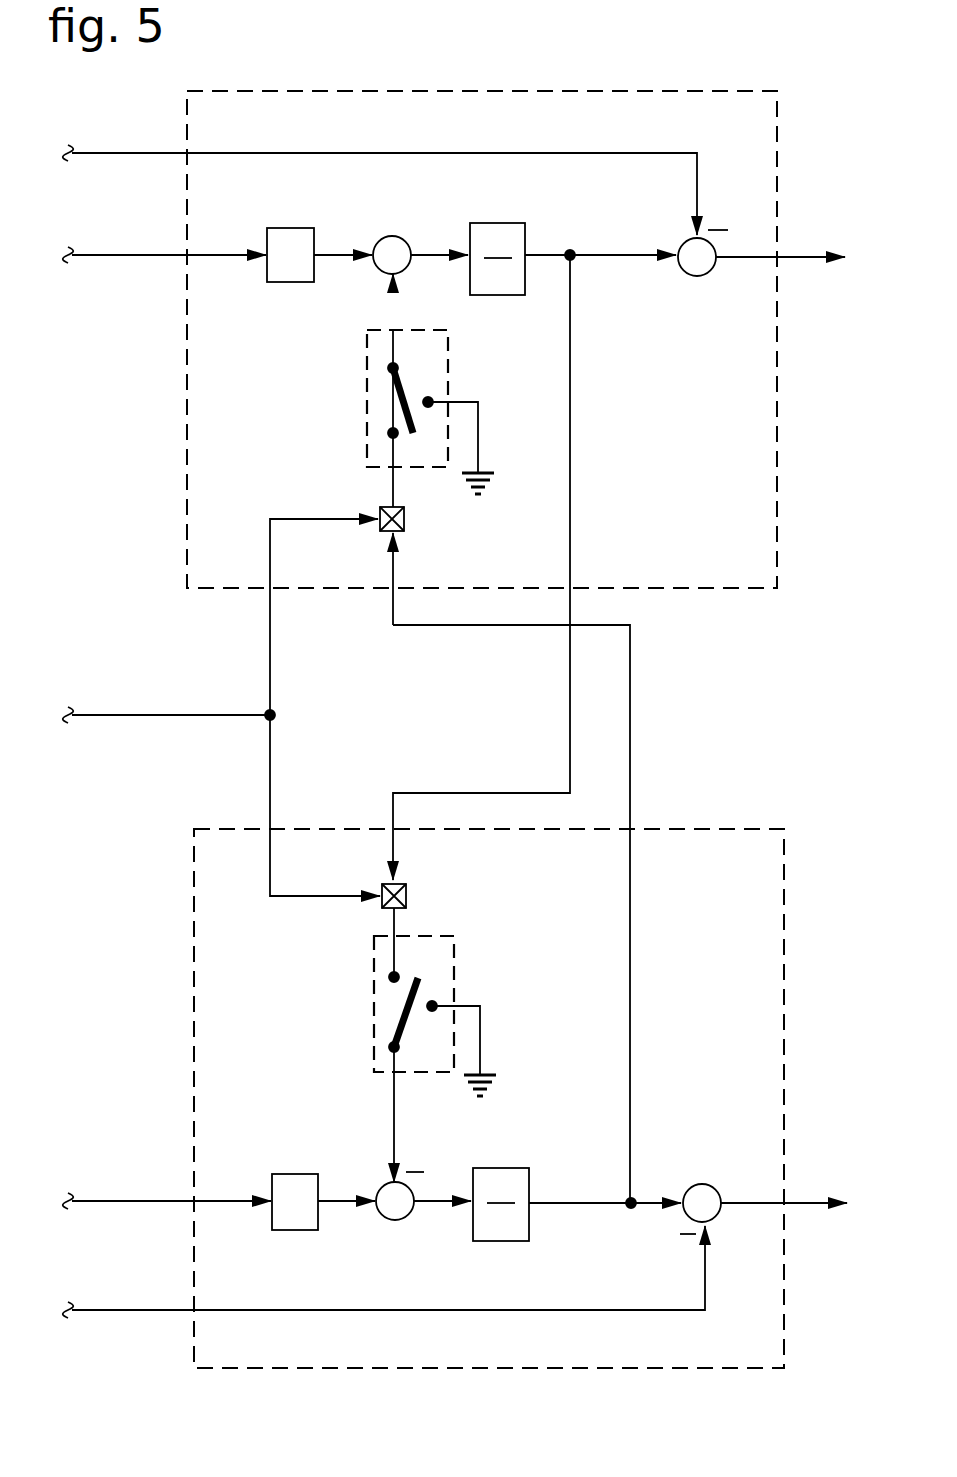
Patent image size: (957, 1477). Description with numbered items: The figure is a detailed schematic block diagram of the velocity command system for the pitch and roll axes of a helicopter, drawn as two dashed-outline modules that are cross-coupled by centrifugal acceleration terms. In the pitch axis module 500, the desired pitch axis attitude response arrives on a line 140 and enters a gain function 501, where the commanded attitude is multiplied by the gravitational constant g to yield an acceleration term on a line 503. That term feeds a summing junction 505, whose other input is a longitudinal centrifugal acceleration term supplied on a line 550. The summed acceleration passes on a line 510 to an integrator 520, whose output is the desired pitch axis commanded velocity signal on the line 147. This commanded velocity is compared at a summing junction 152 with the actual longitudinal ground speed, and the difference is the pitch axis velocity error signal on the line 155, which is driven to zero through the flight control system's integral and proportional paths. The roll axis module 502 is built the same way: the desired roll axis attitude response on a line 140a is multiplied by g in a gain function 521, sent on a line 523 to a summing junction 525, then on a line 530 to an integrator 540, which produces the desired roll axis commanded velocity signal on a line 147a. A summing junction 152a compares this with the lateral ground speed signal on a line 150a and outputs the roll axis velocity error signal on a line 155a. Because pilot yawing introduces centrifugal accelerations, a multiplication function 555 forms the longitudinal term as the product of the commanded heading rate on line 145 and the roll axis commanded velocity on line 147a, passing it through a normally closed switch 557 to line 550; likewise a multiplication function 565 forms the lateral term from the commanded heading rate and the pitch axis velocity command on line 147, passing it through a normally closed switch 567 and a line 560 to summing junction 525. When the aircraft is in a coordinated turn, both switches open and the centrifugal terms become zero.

The pitch axis module 500 is at (725, 92).
The lateral ground speed signal line 150a is at (550, 153).
The desired pitch axis attitude response line 140 is at (160, 254).
The gain function 501 is at (268, 230).
The acceleration term line 503 is at (336, 252).
The summing junction 505 is at (398, 236).
The acceleration term line 510 is at (423, 262).
The integrator 520 is at (482, 222).
The desired pitch axis commanded velocity signal line 147 is at (580, 255).
The summing junction 152 is at (700, 277).
The pitch axis velocity error signal line 155 is at (800, 260).
The longitudinal centrifugal acceleration term line 550 is at (388, 314).
The normally closed switch 557 is at (450, 352).
The multiplication function 555 is at (405, 519).
The desired roll axis commanded velocity signal line 147a is at (436, 627).
The commanded heading rate line 145 is at (100, 714).
The roll axis module 502 is at (705, 829).
The multiplication function 565 is at (408, 900).
The normally closed switch 567 is at (455, 946).
The lateral centrifugal acceleration term line 560 is at (393, 1132).
The desired roll axis attitude response line 140a is at (162, 1198).
The gain function 521 is at (276, 1173).
The gain function output line 523 is at (333, 1197).
The summing junction 525 is at (409, 1186).
The summing junction output line 530 is at (420, 1210).
The integrator 540 is at (495, 1168).
The summing junction 152a is at (696, 1185).
The roll axis velocity error signal line 155a is at (805, 1201).